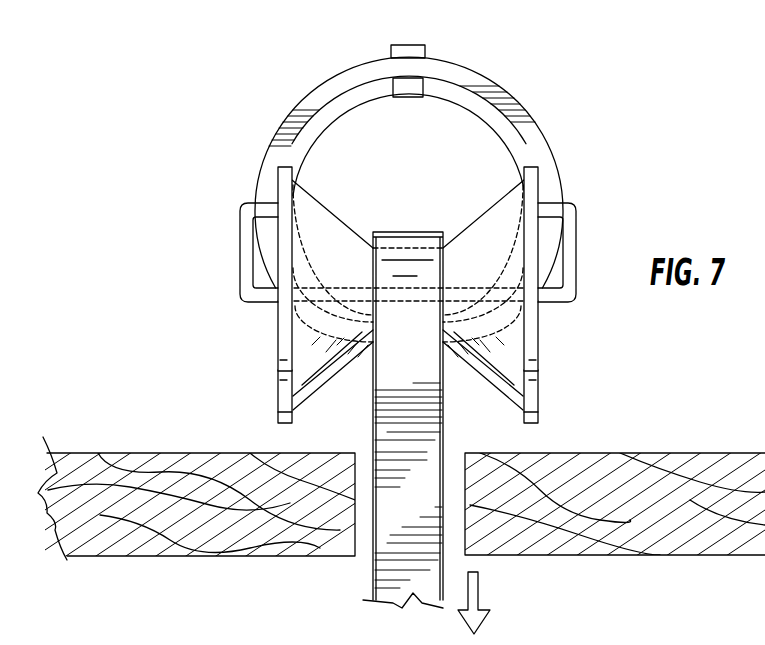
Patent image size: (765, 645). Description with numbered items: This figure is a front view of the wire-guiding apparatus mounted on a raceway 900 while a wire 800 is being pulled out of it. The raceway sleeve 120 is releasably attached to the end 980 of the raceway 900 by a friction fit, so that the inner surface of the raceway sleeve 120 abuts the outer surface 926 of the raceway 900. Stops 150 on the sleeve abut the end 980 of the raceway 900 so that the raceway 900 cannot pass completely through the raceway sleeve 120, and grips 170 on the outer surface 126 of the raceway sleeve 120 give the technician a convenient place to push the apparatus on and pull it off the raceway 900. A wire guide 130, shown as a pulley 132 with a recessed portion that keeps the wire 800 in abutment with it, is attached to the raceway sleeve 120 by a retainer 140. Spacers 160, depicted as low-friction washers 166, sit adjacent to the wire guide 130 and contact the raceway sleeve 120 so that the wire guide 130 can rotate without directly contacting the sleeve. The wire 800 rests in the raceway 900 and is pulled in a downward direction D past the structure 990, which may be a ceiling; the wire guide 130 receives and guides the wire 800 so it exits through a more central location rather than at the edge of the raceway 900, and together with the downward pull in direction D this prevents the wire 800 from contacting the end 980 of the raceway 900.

The raceway sleeve 120 is at (417, 147).
The outer surface 126 is at (361, 58).
The end 980 is at (397, 121).
The outer surface 926 is at (493, 132).
The raceway 900 is at (436, 147).
The grips 170 is at (411, 45).
The stops 150 is at (407, 98).
The retainer 140 is at (240, 255).
The spacers 160 is at (404, 295).
The washers 166 is at (278, 383).
The pulley 132 is at (317, 367).
The wire guide 130 is at (512, 398).
The wire 800 is at (373, 580).
The structure 990 is at (733, 462).
The downward direction D is at (478, 592).